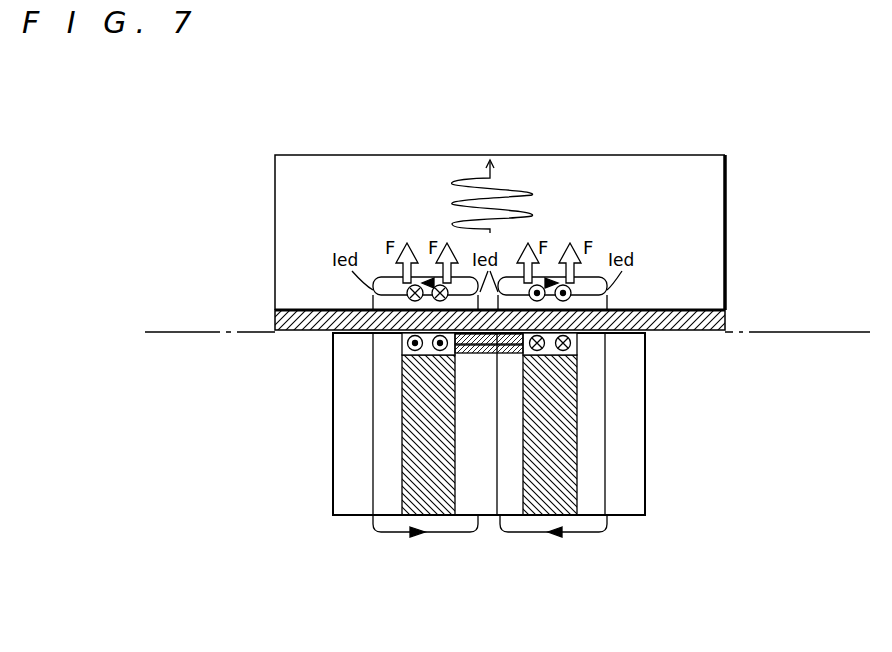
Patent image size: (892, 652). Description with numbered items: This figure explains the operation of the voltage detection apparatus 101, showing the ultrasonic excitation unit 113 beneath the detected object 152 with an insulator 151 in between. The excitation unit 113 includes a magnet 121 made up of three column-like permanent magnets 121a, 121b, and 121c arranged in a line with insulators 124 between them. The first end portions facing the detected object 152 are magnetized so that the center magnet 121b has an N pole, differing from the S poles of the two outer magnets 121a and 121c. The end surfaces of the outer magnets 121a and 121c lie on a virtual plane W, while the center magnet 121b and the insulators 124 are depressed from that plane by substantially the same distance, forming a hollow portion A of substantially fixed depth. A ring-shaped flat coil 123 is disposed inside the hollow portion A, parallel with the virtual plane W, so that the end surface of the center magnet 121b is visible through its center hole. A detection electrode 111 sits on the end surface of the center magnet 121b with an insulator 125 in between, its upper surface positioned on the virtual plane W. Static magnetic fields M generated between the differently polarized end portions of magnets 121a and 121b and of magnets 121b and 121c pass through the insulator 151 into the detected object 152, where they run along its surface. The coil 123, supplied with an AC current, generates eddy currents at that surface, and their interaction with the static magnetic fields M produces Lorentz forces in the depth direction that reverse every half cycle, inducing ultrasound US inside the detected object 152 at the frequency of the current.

The eddy current detection apparatus 101 is at (503, 98).
The detected object 152 is at (727, 236).
The insulator 151 is at (727, 322).
The ultrasonic excitation unit 113 is at (455, 479).
The magnet 121 is at (489, 479).
The magnet 121a is at (372, 518).
The magnet 121b is at (487, 518).
The magnet 121c is at (609, 459).
The coil 123 is at (400, 346).
The insulators 124 is at (537, 517).
The detection electrode 111 is at (500, 353).
The insulator 125 is at (508, 346).
The virtual plane W is at (170, 332).
The ultrasound US is at (532, 196).
The hollow portion A is at (398, 339).
The static magnetic field M is at (668, 396).